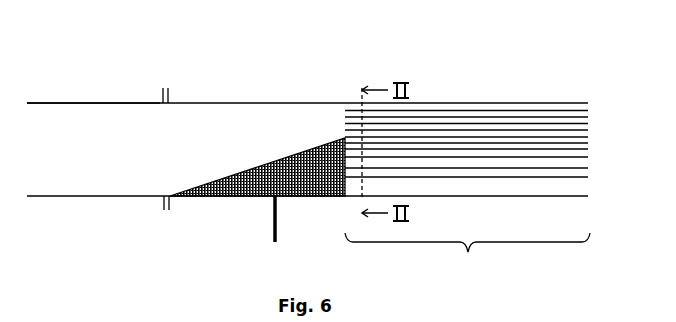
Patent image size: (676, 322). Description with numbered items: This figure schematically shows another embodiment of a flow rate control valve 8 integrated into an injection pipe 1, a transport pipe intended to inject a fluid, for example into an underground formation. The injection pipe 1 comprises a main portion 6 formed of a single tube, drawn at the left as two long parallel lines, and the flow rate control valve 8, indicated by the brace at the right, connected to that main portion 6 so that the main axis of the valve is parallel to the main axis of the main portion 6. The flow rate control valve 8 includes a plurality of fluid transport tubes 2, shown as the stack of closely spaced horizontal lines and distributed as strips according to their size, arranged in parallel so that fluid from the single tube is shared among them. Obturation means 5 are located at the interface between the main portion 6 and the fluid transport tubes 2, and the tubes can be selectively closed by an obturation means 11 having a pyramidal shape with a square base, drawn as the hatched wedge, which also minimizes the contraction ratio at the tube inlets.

The injection pipe 1 is at (212, 74).
The fluid transport tubes 2 is at (477, 118).
The obturation means 5 is at (162, 205).
The main portion 6 is at (70, 122).
The flow rate control valve 8 is at (467, 258).
The obturation means with pyramidal shape 11 is at (259, 180).